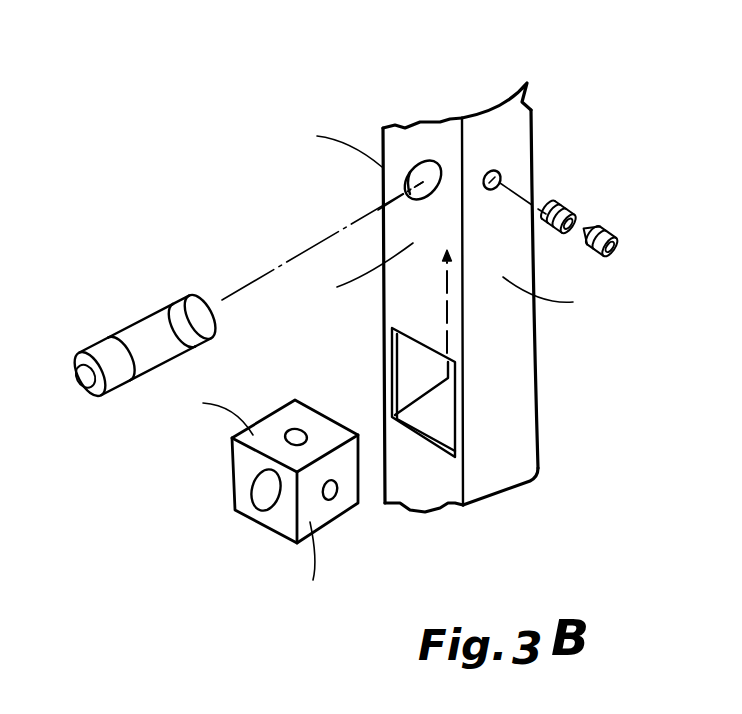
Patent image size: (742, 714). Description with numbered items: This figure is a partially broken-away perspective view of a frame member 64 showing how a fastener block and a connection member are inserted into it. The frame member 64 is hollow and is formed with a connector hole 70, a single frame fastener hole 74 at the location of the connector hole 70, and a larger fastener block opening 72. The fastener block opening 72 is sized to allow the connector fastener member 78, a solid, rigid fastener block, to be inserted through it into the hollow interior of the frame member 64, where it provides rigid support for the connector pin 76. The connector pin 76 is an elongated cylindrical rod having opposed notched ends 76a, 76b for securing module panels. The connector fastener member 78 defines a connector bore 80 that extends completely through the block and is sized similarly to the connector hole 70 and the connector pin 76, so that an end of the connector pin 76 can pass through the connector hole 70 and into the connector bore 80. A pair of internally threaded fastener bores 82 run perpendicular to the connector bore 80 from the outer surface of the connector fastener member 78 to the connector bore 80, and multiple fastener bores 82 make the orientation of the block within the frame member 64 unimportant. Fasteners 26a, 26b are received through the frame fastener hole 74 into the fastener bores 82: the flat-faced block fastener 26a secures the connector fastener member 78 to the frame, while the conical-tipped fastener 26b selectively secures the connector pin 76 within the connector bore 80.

The frame member 64 is at (540, 108).
The connector hole 70 is at (417, 161).
The fastener block opening 72 is at (362, 432).
The frame fastener hole 74 is at (500, 178).
The connector pin 76 is at (235, 324).
The notched end 76a is at (104, 367).
The notched end 76b is at (191, 321).
The connector fastener member 78 is at (274, 408).
The connector bore 80 is at (252, 500).
The fastener bore 82 is at (300, 428).
The fastener 26a is at (562, 204).
The fastener 26b is at (600, 227).